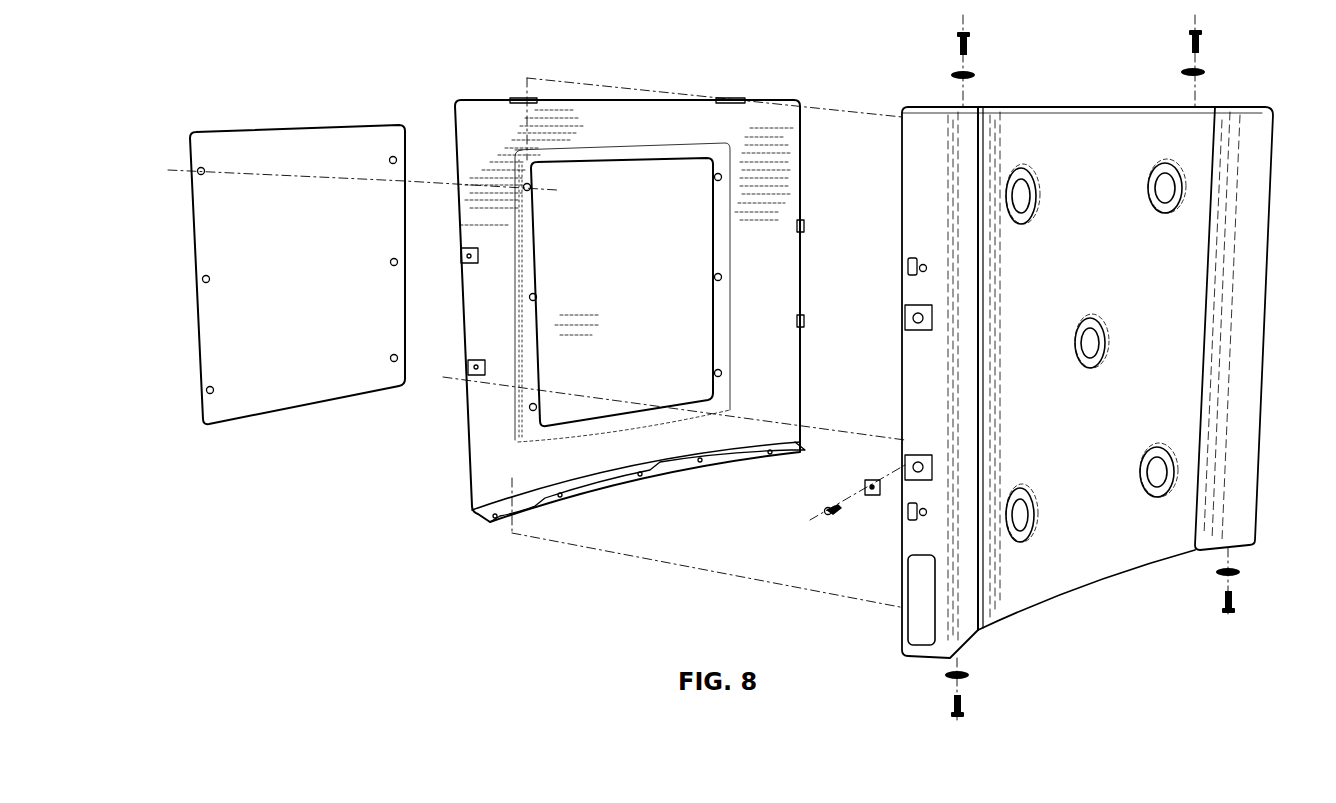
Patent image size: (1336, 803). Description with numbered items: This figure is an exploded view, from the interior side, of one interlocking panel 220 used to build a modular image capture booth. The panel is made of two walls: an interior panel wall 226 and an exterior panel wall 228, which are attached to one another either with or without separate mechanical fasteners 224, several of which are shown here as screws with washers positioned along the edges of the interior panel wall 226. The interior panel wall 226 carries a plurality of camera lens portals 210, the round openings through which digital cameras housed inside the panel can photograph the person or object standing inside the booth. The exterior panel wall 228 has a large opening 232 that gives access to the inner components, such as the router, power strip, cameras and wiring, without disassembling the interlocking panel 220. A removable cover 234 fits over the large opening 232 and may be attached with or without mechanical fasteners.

The interlocking panel 220 is at (397, 603).
The removable cover 234 is at (300, 143).
The exterior panel wall 228 is at (482, 100).
The large opening 232 is at (641, 172).
The interior panel wall 226 is at (1083, 107).
The camera lens portals 210 is at (1152, 178).
The mechanical fasteners 224 is at (957, 35).